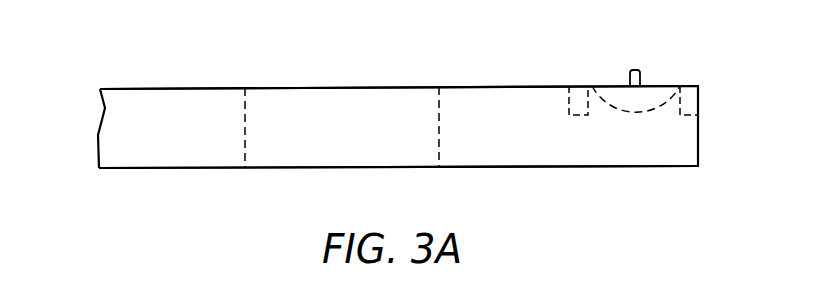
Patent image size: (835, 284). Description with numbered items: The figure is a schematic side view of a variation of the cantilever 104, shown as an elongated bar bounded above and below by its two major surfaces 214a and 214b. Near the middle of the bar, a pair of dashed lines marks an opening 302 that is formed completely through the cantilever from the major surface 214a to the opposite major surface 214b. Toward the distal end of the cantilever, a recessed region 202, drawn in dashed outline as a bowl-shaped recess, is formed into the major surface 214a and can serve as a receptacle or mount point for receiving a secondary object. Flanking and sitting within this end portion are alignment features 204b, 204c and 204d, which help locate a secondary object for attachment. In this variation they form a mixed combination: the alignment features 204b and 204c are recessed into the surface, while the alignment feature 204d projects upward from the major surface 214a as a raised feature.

The cantilever 104 is at (495, 167).
The major surface 214a is at (135, 89).
The major surface 214b is at (157, 168).
The opening 302 is at (315, 88).
The alignment feature 204b is at (582, 86).
The alignment feature 204c is at (688, 85).
The alignment feature 204d is at (630, 70).
The recessed region 202 is at (648, 112).